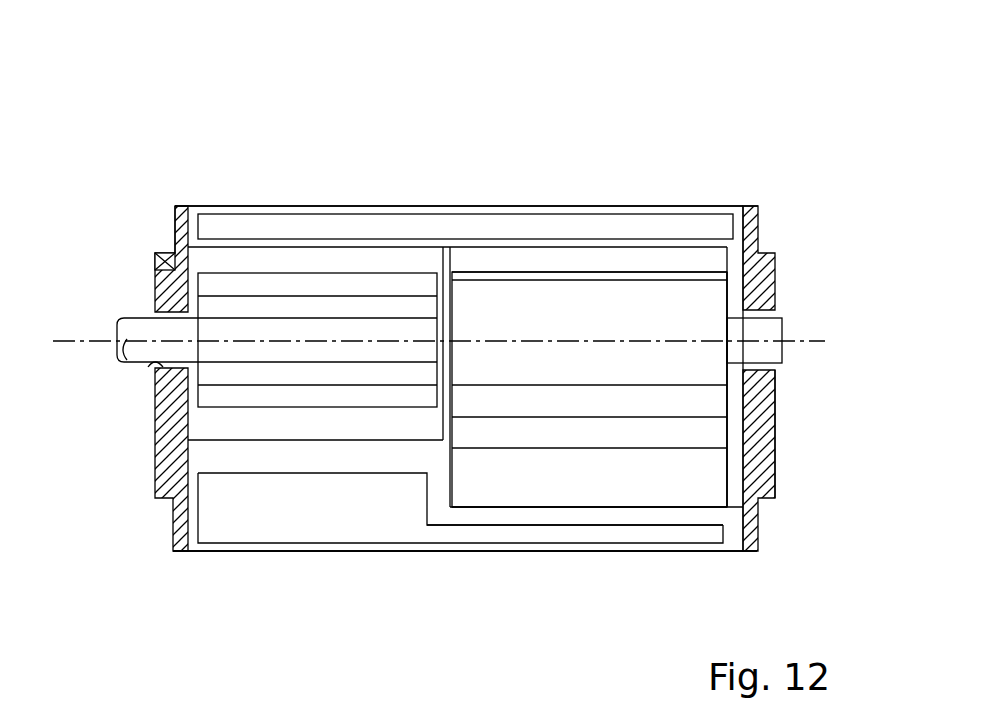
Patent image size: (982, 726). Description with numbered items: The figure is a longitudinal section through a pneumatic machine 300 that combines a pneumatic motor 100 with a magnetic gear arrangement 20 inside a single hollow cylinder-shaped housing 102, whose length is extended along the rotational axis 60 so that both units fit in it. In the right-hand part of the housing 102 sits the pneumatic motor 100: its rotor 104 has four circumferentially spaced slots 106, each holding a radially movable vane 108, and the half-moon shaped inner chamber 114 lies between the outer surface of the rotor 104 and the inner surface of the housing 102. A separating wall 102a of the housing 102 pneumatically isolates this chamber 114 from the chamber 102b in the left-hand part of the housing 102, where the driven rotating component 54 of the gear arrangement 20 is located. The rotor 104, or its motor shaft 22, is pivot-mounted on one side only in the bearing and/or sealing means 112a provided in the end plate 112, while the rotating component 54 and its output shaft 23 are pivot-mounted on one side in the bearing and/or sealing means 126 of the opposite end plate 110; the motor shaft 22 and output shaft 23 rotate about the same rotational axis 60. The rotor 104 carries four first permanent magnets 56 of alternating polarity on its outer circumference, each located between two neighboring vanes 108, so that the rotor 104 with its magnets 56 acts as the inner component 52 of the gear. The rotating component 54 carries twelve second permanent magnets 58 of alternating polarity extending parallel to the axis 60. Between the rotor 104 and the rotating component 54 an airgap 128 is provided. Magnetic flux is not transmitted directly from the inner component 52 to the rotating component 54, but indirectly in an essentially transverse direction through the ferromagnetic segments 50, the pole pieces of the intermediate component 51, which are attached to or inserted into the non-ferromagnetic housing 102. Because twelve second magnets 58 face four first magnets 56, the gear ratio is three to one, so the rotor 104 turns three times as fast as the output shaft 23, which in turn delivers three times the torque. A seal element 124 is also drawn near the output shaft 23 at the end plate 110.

The pneumatic machine 300 is at (595, 95).
The pneumatic motor 100 is at (690, 171).
The magnetic gear arrangement 20 is at (349, 203).
The end plate 110 is at (166, 252).
The bearing and/or sealing means 126 is at (172, 308).
The output shaft 23 is at (137, 330).
The rotational axis 60 is at (77, 345).
The shaft seal 124 is at (152, 363).
The intermediate component 51 is at (213, 208).
The ferromagnetic segments 50 is at (250, 230).
The second permanent magnets 58 is at (286, 306).
The rotating component 54 is at (417, 271).
The airgap 128 is at (439, 306).
The housing 102 is at (537, 246).
The separating wall 102a is at (443, 423).
The chamber 102b is at (223, 428).
The rotor 104 is at (621, 327).
The slots 106 is at (625, 279).
The vanes 108 is at (662, 408).
The first permanent magnets 56 is at (704, 301).
The end plate 112 is at (777, 283).
The bearing and/or sealing means 112a is at (776, 394).
The motor shaft 22 is at (766, 349).
The inner chamber 114 is at (542, 517).
The inner component 52 is at (500, 530).